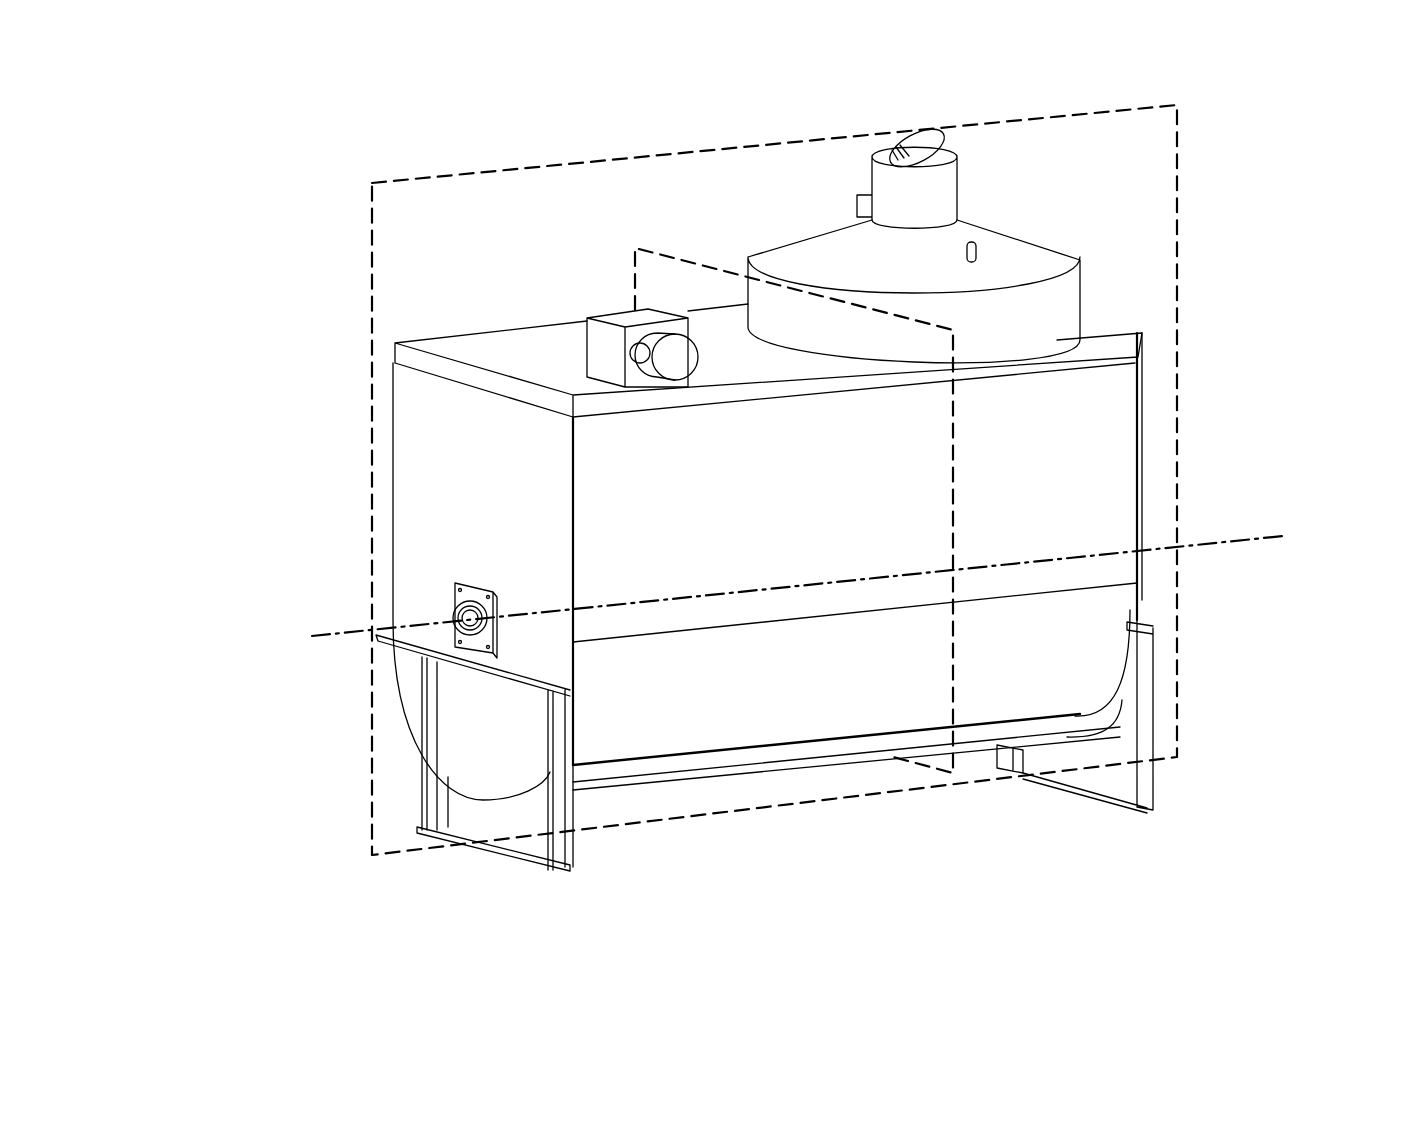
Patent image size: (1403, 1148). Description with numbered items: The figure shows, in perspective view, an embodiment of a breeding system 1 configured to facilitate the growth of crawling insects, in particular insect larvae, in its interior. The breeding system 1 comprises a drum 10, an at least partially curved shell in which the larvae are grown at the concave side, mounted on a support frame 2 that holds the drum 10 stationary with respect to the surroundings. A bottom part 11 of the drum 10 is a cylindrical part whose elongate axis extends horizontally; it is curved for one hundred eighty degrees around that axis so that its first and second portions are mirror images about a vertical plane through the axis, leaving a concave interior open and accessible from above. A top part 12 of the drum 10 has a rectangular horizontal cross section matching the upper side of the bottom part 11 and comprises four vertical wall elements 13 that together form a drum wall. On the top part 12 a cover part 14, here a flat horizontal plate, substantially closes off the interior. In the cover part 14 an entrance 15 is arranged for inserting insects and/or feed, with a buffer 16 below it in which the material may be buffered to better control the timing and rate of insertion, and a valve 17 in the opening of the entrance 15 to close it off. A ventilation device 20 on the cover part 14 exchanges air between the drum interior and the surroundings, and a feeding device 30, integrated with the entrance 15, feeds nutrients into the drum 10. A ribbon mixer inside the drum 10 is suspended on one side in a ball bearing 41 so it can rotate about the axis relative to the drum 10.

The breeding system 1 is at (422, 120).
The support frame 2 is at (1130, 777).
The drum 10 is at (408, 549).
The bottom part 11 is at (802, 728).
The top part 12 is at (1112, 465).
The wall elements 13 is at (1058, 512).
The cover part 14 is at (485, 340).
The entrance 15 is at (890, 132).
The buffer 16 is at (1020, 252).
The valve 17 is at (925, 145).
The ventilation device 20 is at (605, 348).
The feeding device 30 is at (802, 205).
The ball bearing 41 is at (480, 620).